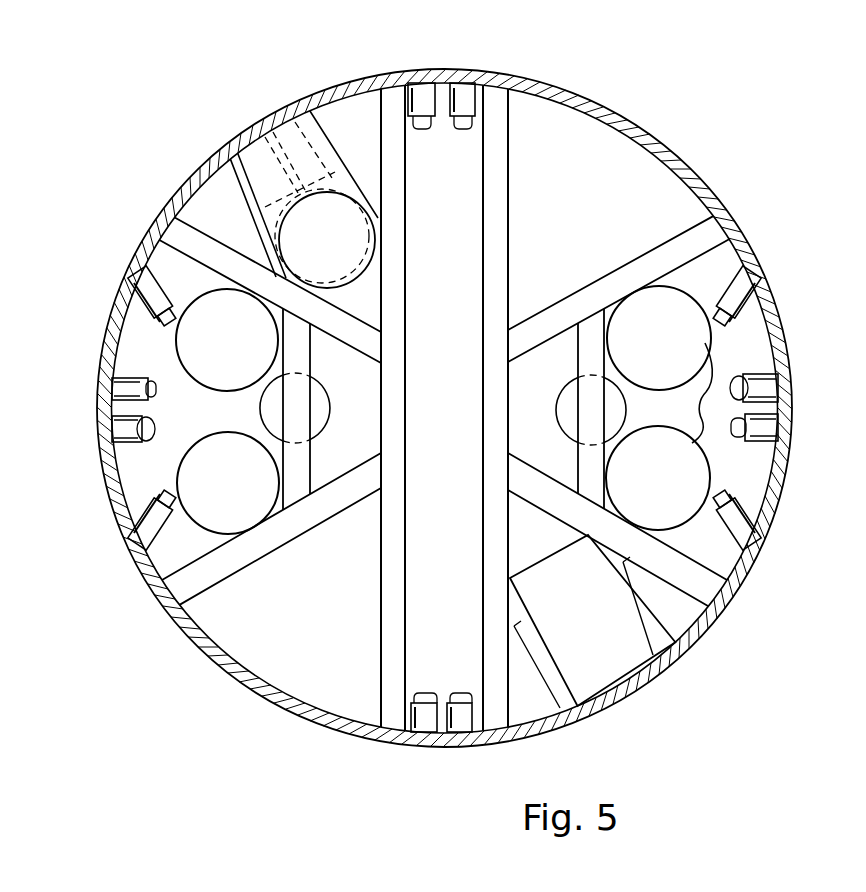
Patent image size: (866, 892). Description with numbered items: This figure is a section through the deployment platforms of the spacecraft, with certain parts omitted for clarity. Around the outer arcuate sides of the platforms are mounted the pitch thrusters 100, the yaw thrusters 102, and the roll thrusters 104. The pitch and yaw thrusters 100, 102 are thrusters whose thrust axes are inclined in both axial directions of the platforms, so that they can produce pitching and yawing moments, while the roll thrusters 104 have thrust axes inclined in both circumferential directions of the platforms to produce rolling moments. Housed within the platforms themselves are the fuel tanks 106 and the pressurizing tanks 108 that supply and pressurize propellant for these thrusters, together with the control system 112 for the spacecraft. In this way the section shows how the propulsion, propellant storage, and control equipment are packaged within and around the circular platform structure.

The pitch thrusters 100 is at (455, 88).
The yaw thrusters 102 is at (112, 422).
The roll thrusters 104 is at (140, 289).
The fuel tanks 106 is at (318, 405).
The pressurizing tanks 108 is at (704, 410).
The control system 112 is at (352, 256).